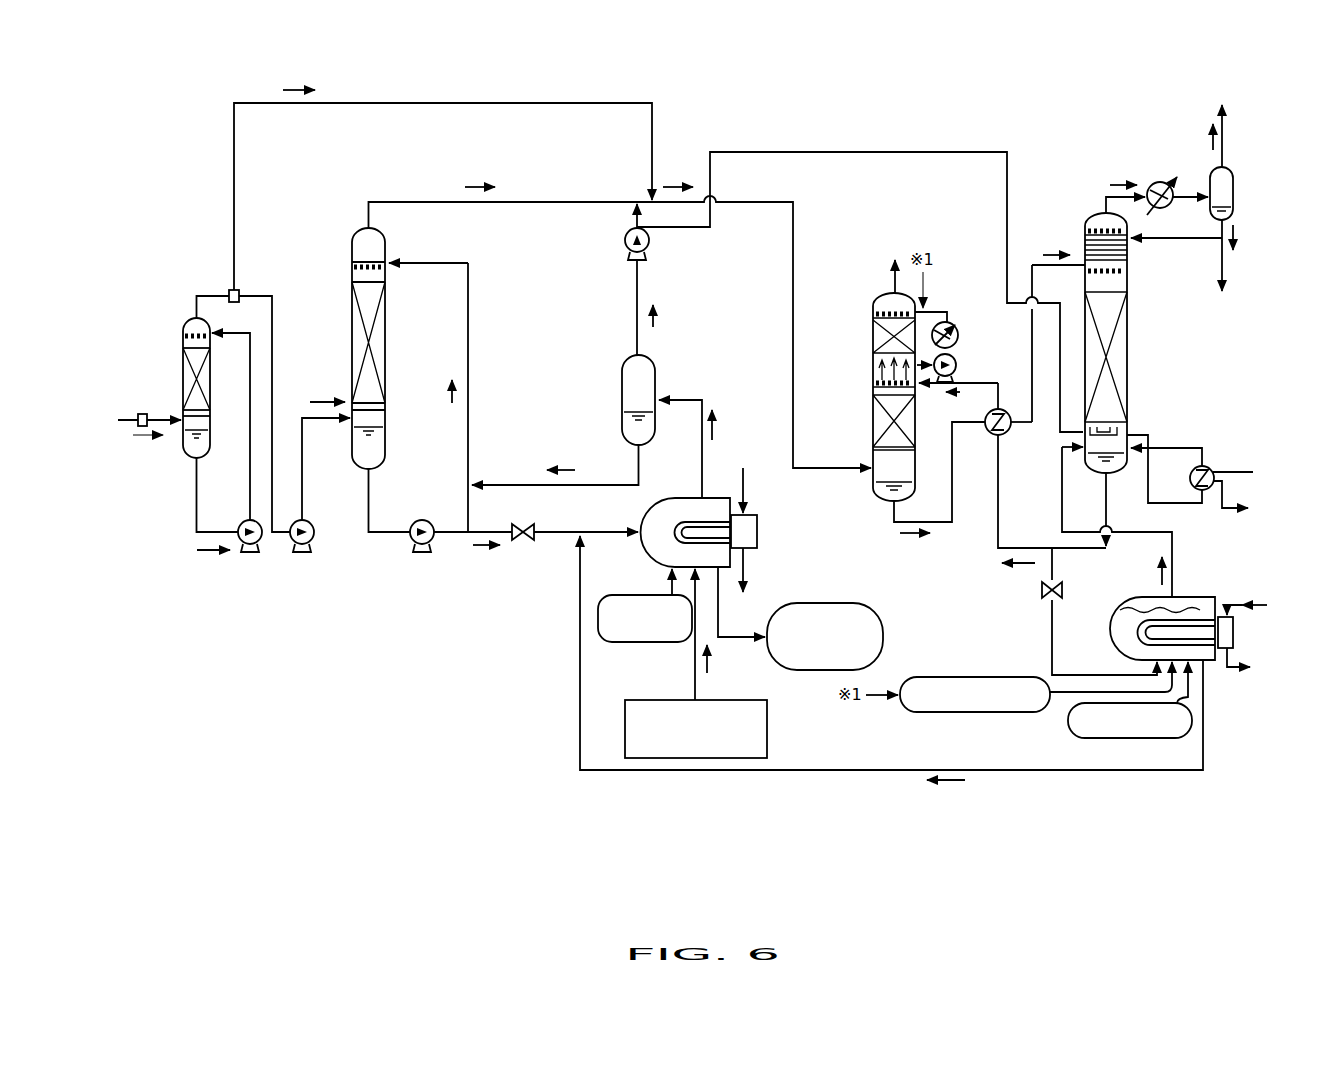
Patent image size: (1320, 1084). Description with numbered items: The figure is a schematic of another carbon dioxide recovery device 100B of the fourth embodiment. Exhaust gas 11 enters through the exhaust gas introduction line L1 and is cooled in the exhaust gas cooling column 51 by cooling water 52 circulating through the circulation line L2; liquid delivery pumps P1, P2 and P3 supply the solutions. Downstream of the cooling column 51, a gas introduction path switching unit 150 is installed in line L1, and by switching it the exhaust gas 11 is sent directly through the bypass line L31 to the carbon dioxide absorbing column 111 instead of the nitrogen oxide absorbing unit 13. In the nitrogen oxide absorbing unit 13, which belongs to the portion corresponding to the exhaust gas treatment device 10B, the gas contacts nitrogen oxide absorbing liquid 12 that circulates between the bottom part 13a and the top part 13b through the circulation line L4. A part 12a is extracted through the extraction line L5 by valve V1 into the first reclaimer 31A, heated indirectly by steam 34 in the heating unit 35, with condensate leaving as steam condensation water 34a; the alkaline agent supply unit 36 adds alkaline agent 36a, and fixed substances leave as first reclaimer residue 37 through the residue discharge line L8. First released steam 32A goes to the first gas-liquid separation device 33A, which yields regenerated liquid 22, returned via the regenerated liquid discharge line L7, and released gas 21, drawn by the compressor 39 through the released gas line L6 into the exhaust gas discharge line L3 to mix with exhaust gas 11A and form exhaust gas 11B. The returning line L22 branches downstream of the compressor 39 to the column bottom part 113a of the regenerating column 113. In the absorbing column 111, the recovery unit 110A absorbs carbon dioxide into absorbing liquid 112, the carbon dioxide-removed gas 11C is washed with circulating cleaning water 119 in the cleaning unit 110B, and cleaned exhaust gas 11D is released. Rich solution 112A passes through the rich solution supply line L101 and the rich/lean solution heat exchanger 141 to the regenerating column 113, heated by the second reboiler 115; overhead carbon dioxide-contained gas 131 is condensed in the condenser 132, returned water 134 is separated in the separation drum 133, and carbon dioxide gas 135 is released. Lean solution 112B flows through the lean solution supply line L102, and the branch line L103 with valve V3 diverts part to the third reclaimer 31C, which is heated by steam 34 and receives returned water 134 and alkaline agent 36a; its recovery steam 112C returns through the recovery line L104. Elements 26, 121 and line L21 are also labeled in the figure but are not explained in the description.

The CO2 recovery device 100B is at (812, 88).
The exhaust gas 11 is at (140, 444).
The gas introduction path switching unit 150 is at (143, 410).
The exhaust gas cooling column 51 is at (186, 300).
The cooling water 52 is at (211, 556).
The nitrogen oxide absorbing unit 13 is at (345, 218).
The bottom part 13a is at (386, 450).
The top part 13b is at (350, 243).
The nitrogen oxide absorbing liquid 12 is at (440, 402).
The part of the nitrogen oxide absorbing liquid 12a is at (485, 550).
The exhaust gas 11A is at (475, 180).
The exhaust gas 11B is at (673, 180).
The exhaust gas treatment device 10B is at (525, 177).
The compressor 39 is at (624, 240).
The released gas 21 is at (656, 330).
The nitrogen oxide absorbing liquid regenerated liquid 22 is at (577, 462).
The first gas-liquid separation device 33A is at (662, 378).
The first reclaimer 31A is at (720, 488).
The first released steam 32A is at (712, 433).
The steam 34 is at (745, 492).
The steam condensation water 34a is at (745, 570).
The heating unit 35 is at (759, 532).
The makeup water supply 26 is at (636, 645).
The alkaline agent supply unit 36 is at (735, 698).
The alkaline agent 36a is at (710, 666).
The first reclaimer residue 37 is at (824, 672).
The returned water 134 is at (910, 677).
The return line 121 is at (970, 782).
The CO2 absorbing column 111 is at (905, 282).
The cleaned exhaust gas 11D is at (890, 276).
The circulating cleaning water 119 is at (945, 305).
The CO2 absorbing liquid 112 is at (958, 336).
The CO2-removed exhaust gas 11C is at (872, 381).
The cleaning unit 110B is at (871, 338).
The CO2 recovery unit 110A is at (871, 428).
The rich/lean solution heat exchanger 141 is at (990, 437).
The rich solution 112A is at (902, 538).
The lean solution 112B is at (1025, 566).
The CO2 absorbing liquid regenerating column 113 is at (1098, 215).
The column bottom part 113a is at (1116, 473).
The CO2-contained gas 131 is at (1112, 180).
The condenser 132 is at (1158, 181).
The separation drum 133 is at (1236, 193).
The CO2 gas 135 is at (1210, 148).
The second reboiler 115 is at (1206, 465).
The third reclaimer 31C is at (1104, 610).
The recovery steam 112C is at (1176, 590).
The exhaust gas introduction line L1 is at (216, 290).
The circulation line L2 is at (248, 478).
The exhaust gas discharge line L3 is at (588, 199).
The nitrogen oxide absorbing liquid circulation line L4 is at (396, 536).
The nitrogen oxide absorbing liquid extraction line L5 is at (548, 538).
The released gas line L6 is at (641, 341).
The regenerated liquid discharge line L7 is at (516, 483).
The residue discharge line L8 is at (700, 470).
The line L21 is at (860, 772).
The common absorbing agent component returning line L22 is at (755, 150).
The bypass line L31 is at (436, 97).
The rich solution supply line L101 is at (940, 525).
The lean solution supply line L102 is at (1000, 485).
The branch line L103 is at (1050, 617).
The recovery line L104 is at (1176, 568).
The liquid delivery pump P1 is at (249, 553).
The liquid delivery pump P2 is at (302, 553).
The liquid delivery pump P3 is at (422, 553).
The valve V1 is at (523, 542).
The valve V3 is at (1060, 602).